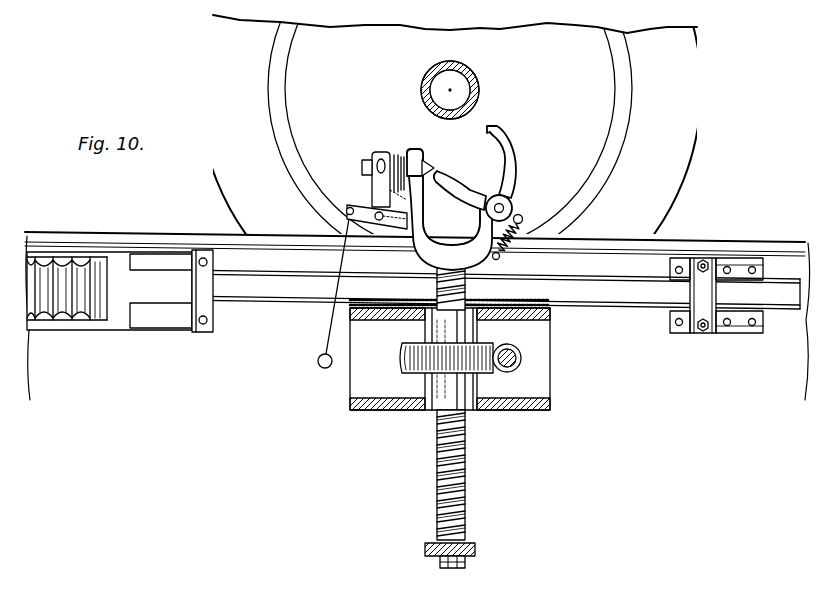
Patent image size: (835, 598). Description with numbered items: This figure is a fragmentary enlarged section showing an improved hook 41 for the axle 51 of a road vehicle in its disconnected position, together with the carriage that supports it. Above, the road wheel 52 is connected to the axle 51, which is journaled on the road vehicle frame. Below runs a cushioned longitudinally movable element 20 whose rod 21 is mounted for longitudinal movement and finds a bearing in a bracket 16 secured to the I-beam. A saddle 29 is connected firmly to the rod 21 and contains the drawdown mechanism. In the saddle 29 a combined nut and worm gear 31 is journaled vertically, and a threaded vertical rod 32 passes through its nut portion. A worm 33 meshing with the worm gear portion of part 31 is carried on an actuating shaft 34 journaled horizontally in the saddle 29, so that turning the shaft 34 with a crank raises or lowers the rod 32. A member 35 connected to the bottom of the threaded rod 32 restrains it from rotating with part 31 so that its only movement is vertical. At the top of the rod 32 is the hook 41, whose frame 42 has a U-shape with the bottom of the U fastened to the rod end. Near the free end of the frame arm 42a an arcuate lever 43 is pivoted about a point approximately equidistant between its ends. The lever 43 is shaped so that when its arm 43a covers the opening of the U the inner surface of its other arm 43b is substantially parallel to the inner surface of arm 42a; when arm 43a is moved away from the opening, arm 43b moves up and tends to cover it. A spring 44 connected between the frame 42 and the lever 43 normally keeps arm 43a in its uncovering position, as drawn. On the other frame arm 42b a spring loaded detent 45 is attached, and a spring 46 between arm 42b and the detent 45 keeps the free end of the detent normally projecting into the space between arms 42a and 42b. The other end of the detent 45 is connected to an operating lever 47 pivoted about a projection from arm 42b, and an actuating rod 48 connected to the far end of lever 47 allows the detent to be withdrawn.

The bracket 16 is at (738, 335).
The cushioned longitudinally movable element 20 is at (113, 340).
The rod 21 is at (248, 298).
The saddle 29 is at (558, 403).
The combined nut and worm gear 31 is at (423, 380).
The threaded vertical rod 32 is at (438, 440).
The worm 33 is at (513, 370).
The actuating shaft 34 is at (522, 358).
The restraining member 35 is at (474, 552).
The hook 41 is at (404, 252).
The frame 42 is at (437, 250).
The frame arm 42a is at (491, 195).
The frame arm 42b is at (412, 150).
The arcuate lever 43 is at (475, 194).
The lever arm 43a is at (512, 140).
The lever arm 43b is at (437, 175).
The spring 44 is at (500, 249).
The spring loaded detent 45 is at (428, 168).
The spring 46 is at (395, 177).
The operating lever 47 is at (381, 152).
The actuating rod 48 is at (323, 328).
The axle 51 is at (478, 83).
The road wheel 52 is at (678, 165).